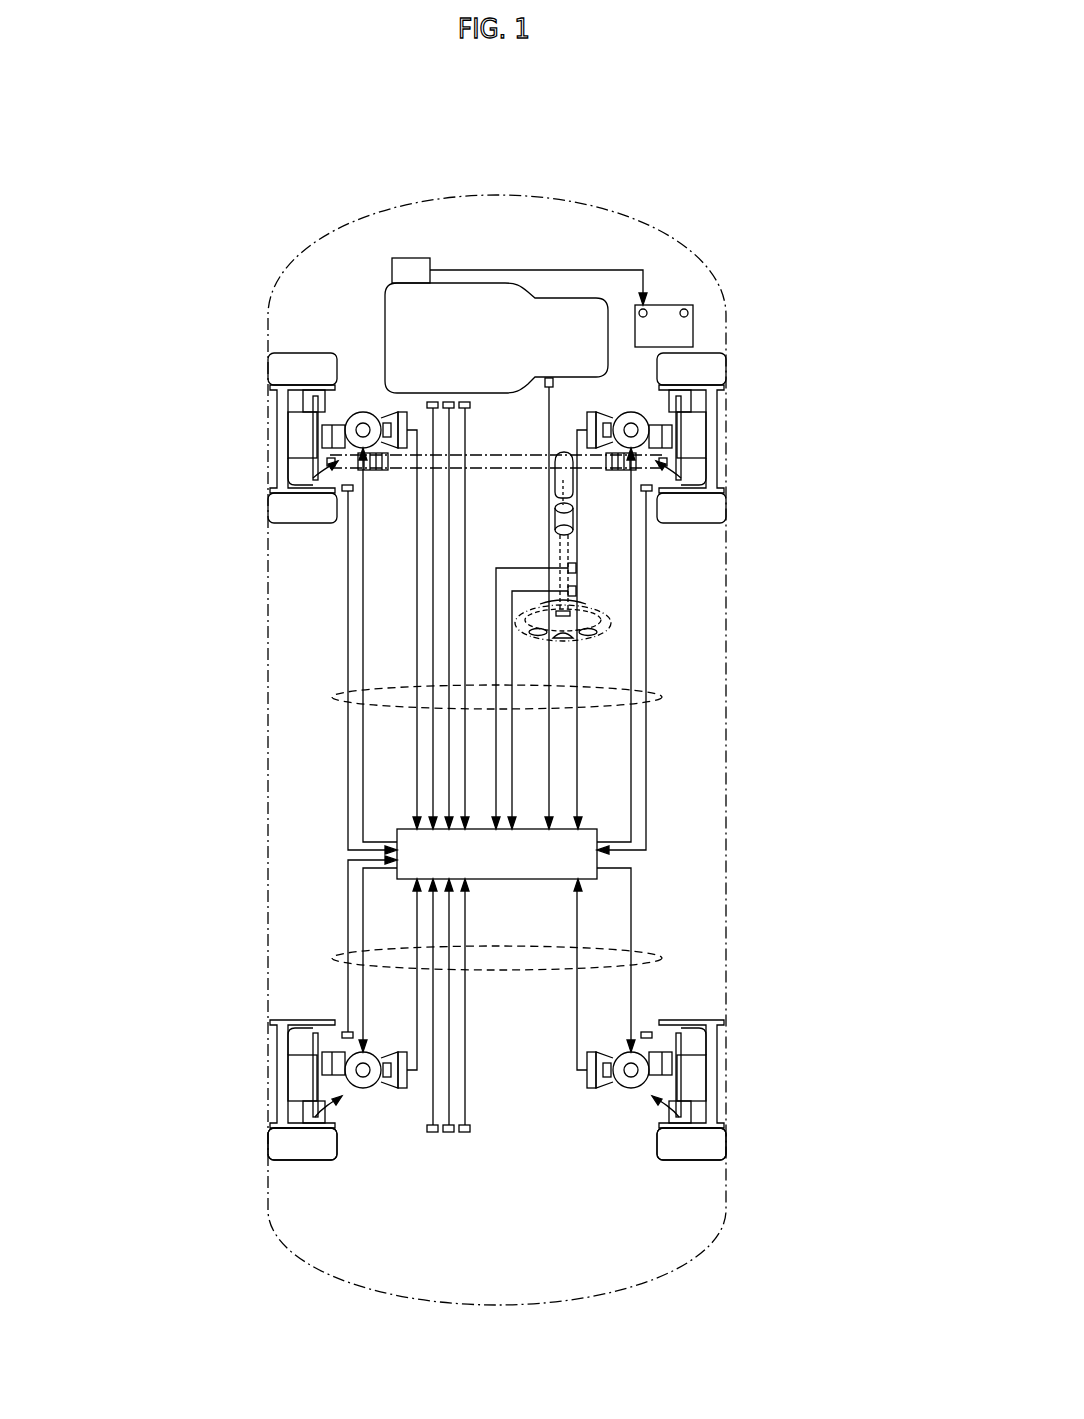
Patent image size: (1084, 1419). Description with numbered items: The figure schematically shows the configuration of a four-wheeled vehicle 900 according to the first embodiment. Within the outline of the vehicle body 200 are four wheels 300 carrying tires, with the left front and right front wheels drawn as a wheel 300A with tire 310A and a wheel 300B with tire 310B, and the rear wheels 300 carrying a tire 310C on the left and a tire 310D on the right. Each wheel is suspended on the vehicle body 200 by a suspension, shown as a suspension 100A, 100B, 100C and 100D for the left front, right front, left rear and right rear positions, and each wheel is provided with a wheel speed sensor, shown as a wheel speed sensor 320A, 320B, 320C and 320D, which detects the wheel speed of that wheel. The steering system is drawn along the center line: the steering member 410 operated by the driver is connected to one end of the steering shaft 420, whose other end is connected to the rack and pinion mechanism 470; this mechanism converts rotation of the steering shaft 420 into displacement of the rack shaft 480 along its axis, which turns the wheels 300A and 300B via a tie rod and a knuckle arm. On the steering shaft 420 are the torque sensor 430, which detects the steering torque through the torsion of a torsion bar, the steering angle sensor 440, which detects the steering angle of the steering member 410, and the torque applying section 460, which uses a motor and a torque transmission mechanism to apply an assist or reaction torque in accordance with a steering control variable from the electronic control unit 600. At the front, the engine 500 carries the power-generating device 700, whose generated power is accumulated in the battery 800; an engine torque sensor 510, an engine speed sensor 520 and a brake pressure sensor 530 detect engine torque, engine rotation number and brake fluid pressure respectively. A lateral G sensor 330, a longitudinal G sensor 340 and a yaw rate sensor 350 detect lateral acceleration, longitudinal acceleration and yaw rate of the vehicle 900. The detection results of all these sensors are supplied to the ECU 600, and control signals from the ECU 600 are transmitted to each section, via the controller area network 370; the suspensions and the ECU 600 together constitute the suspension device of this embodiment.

The vehicle 900 is at (698, 154).
The vehicle body 200 is at (707, 283).
The power-generating device 700 is at (421, 261).
The engine 500 is at (388, 333).
The battery 800 is at (693, 332).
The engine torque sensor 510 is at (435, 402).
The engine speed sensor 520 is at (451, 402).
The brake pressure sensor 530 is at (466, 402).
The wheel 300A is at (246, 452).
The wheel 300B is at (750, 452).
The wheel 300 is at (500, 1095).
The tire 310A is at (280, 512).
The tire 310B is at (714, 512).
The tire 310C is at (280, 1152).
The tire 310D is at (714, 1152).
The wheel speed sensor 320A is at (333, 497).
The wheel speed sensor 320B is at (661, 497).
The wheel speed sensor 320C is at (342, 1033).
The wheel speed sensor 320D is at (652, 1033).
The suspension 100A is at (275, 484).
The suspension 100B is at (719, 484).
The suspension 100C is at (275, 1124).
The suspension 100D is at (719, 1124).
The rack shaft 480 is at (488, 456).
The rack and pinion mechanism 470 is at (556, 478).
The torque applying section 460 is at (571, 519).
The steering angle sensor 440 is at (578, 568).
The torque sensor 430 is at (578, 592).
The steering shaft 420 is at (578, 601).
The steering member 410 is at (612, 630).
The controller area network (CAN) 370 is at (660, 960).
The electronic control unit (ECU) 600 is at (490, 881).
The lateral G sensor 330 is at (434, 1133).
The longitudinal G sensor 340 is at (450, 1133).
The yaw rate sensor 350 is at (466, 1133).